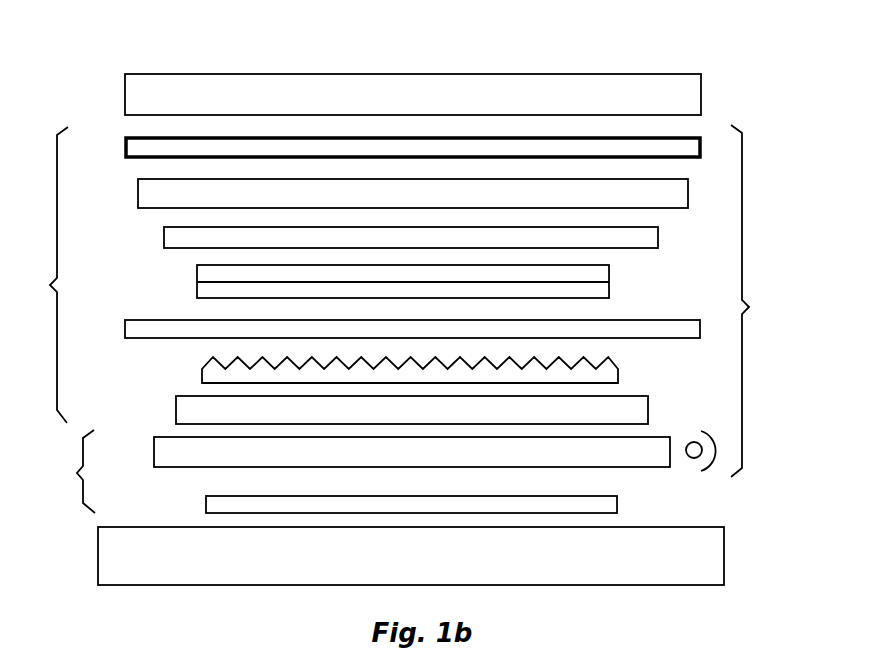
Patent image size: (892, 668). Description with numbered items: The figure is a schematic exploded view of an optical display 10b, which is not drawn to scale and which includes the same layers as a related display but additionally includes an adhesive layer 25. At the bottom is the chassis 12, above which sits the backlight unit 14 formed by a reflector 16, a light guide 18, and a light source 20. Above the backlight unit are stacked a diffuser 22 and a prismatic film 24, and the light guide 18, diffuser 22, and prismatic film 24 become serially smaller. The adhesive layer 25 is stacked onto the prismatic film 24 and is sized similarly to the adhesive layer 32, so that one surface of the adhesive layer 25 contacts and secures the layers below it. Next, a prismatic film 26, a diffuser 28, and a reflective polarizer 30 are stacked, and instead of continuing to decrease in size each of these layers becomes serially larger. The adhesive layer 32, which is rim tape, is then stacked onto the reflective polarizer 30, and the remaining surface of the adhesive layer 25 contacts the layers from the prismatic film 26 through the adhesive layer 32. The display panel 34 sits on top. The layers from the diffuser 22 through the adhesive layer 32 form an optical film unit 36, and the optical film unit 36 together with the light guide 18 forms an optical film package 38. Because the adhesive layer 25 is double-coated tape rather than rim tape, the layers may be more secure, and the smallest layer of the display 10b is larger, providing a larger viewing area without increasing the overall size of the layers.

The optical display 10b is at (593, 53).
The chassis 12 is at (103, 557).
The backlight unit 14 is at (68, 471).
The reflector 16 is at (212, 503).
The light guide 18 is at (162, 455).
The light source 20 is at (692, 441).
The diffuser 22 is at (183, 409).
The prismatic film 24 is at (210, 372).
The adhesive layer 25 is at (686, 328).
The prismatic film 26 is at (207, 288).
The diffuser 28 is at (177, 238).
The reflective polarizer 30 is at (152, 193).
The adhesive layer 32 is at (128, 147).
The display panel 34 is at (392, 87).
The optical film unit 36 is at (40, 275).
The optical film package 38 is at (758, 301).